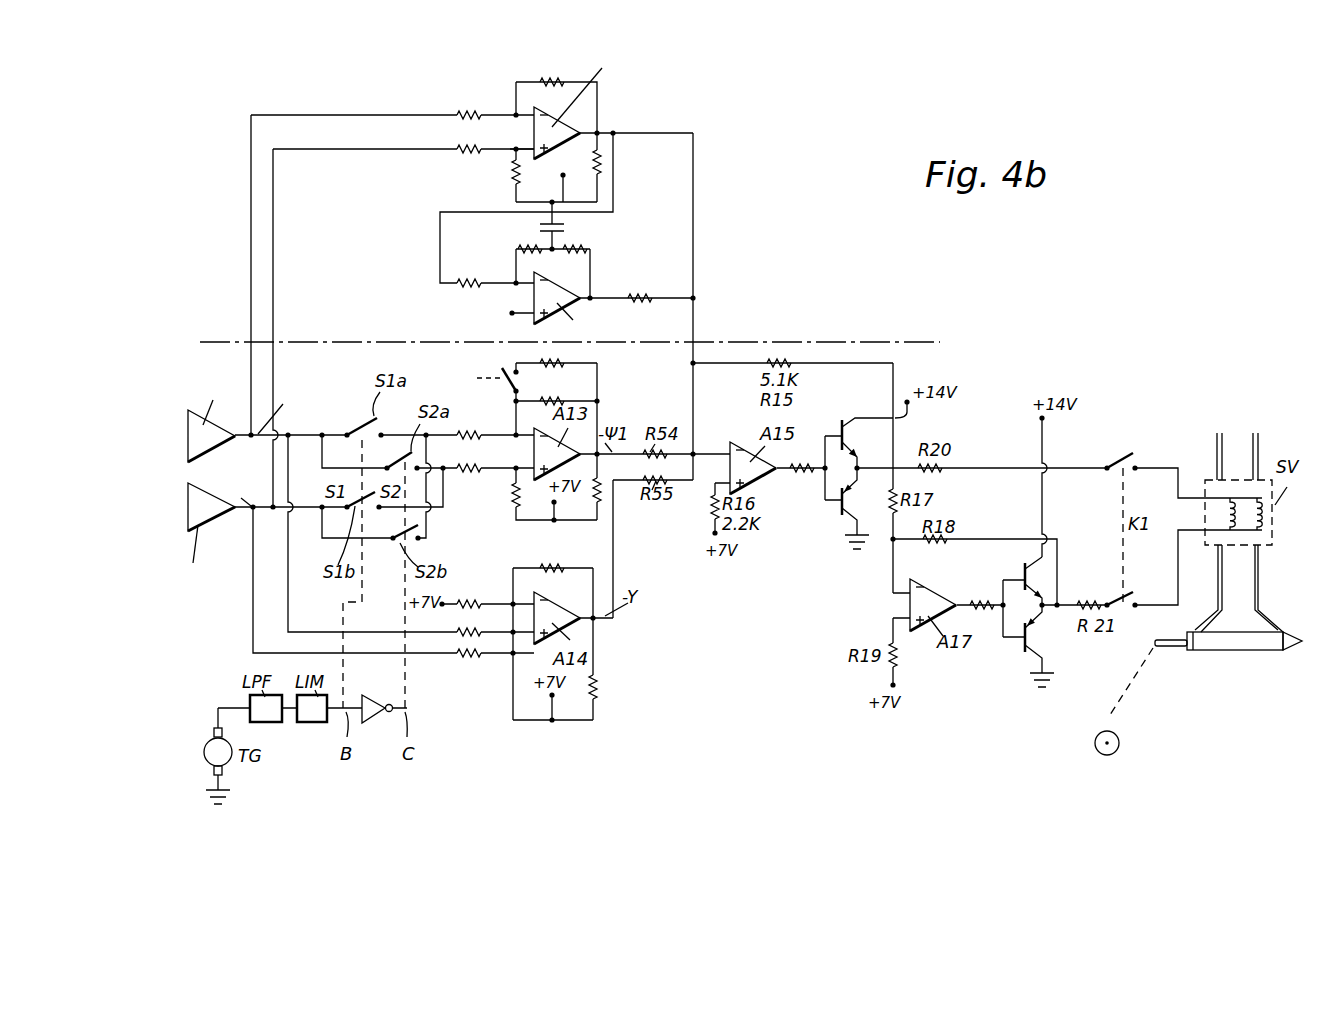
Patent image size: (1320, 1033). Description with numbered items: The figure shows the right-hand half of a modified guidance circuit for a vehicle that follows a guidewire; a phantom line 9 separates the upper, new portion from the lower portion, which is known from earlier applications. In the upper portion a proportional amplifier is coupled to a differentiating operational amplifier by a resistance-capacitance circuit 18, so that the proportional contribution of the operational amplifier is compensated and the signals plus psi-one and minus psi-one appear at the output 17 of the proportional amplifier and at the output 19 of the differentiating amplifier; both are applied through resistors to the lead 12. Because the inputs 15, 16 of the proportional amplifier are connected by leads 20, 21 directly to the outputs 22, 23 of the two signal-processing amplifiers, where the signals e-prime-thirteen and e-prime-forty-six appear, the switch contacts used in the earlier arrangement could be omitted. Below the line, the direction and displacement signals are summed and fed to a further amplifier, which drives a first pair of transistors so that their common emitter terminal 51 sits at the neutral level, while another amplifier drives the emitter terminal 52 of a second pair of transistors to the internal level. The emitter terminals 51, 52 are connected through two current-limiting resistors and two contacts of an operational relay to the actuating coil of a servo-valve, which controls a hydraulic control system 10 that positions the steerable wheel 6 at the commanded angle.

The steerable wheel 6 is at (1120, 742).
The phantom line 9 is at (878, 341).
The hydraulic control system 10 is at (1233, 645).
The lead 12 is at (693, 412).
The input of amplifier A13.2 15 is at (534, 152).
The input of amplifier A13.2 16 is at (535, 117).
The output of amplifier A13.2 17 is at (585, 130).
The resistance-capacitance circuit 18 is at (578, 232).
The output of amplifier A16 19 is at (578, 297).
The lead 20 is at (273, 288).
The lead 21 is at (251, 288).
The output of amplifier A3 22 is at (238, 440).
The output of amplifier A5 23 is at (238, 520).
The emitter terminal 51 is at (859, 483).
The emitter terminal 52 is at (1028, 622).